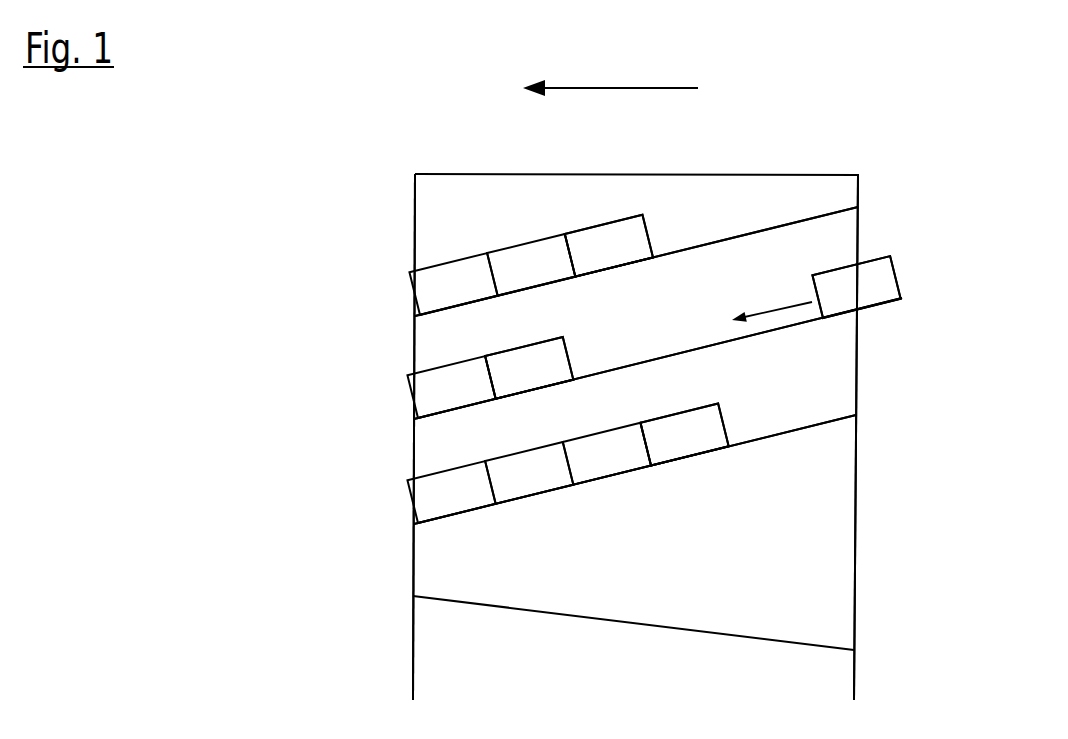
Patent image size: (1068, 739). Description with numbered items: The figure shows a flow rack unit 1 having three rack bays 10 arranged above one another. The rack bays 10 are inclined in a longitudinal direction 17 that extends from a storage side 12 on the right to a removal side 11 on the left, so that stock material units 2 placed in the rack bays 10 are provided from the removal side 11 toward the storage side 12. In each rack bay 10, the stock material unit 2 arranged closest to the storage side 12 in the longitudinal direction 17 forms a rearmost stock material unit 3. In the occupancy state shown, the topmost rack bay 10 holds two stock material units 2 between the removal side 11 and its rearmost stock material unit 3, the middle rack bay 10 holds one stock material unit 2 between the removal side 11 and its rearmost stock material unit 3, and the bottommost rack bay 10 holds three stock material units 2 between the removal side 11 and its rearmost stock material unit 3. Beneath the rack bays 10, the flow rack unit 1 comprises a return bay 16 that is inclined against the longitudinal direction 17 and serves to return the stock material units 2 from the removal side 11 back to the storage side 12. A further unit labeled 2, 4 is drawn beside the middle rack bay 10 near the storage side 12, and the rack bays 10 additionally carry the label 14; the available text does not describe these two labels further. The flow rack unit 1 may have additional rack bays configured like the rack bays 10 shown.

The flow rack unit 1 is at (996, 137).
The stock material unit 2 is at (653, 369).
The rearmost stock material unit 3 is at (607, 340).
The incoming carrier 4 is at (816, 289).
The rack bay 10 is at (765, 230).
The removal side 11 is at (318, 338).
The storage side 12 is at (933, 357).
The guide surface of rail 14 is at (690, 249).
The return bay 16 is at (613, 620).
The longitudinal direction 17 is at (610, 71).